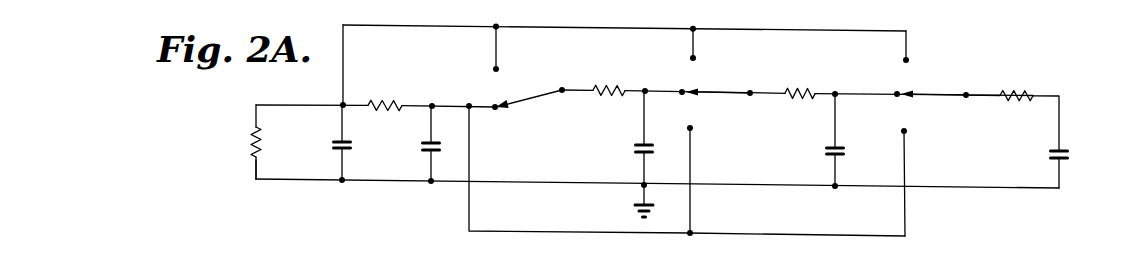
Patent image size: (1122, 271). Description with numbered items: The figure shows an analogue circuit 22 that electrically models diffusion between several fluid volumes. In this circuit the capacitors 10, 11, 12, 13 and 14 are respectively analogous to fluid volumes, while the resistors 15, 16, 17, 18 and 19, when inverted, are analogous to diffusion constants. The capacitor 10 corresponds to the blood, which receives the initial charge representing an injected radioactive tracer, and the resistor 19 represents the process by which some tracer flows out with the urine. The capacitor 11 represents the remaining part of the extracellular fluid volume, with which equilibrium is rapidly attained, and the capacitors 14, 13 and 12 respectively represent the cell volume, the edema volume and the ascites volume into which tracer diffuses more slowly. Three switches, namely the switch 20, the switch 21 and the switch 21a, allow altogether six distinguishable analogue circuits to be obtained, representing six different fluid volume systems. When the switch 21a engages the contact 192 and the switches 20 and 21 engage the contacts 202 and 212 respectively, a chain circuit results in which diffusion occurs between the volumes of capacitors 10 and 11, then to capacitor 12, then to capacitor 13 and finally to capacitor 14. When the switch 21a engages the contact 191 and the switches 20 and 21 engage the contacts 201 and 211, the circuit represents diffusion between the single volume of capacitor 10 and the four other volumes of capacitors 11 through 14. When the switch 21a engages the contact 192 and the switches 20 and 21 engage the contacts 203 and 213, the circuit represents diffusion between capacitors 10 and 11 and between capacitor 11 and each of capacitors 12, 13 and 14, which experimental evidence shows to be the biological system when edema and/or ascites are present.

The capacitor 10 is at (351, 140).
The capacitor 11 is at (437, 147).
The capacitor 12 is at (641, 143).
The capacitor 13 is at (837, 148).
The capacitor 14 is at (1062, 151).
The resistor 15 is at (394, 90).
The resistor 16 is at (628, 79).
The resistor 17 is at (802, 87).
The resistor 18 is at (1018, 88).
The resistor 19 is at (250, 141).
The switch 20 is at (715, 90).
The switch 21 is at (937, 93).
The switch 21a is at (529, 98).
The analogue circuit 22 is at (246, 170).
The contact 191 is at (498, 69).
The contact 192 is at (497, 108).
The contact 201 is at (695, 58).
The contact 202 is at (684, 93).
The contact 203 is at (692, 129).
The contact 211 is at (907, 59).
The contact 212 is at (898, 95).
The contact 213 is at (906, 132).